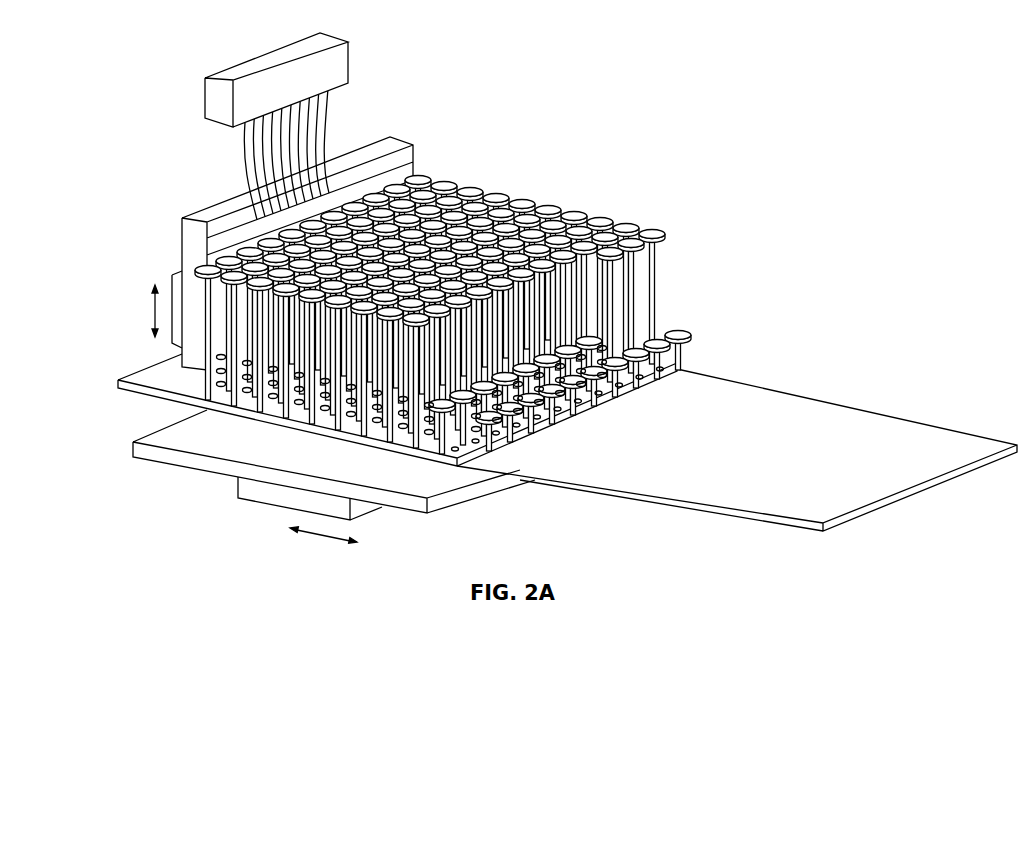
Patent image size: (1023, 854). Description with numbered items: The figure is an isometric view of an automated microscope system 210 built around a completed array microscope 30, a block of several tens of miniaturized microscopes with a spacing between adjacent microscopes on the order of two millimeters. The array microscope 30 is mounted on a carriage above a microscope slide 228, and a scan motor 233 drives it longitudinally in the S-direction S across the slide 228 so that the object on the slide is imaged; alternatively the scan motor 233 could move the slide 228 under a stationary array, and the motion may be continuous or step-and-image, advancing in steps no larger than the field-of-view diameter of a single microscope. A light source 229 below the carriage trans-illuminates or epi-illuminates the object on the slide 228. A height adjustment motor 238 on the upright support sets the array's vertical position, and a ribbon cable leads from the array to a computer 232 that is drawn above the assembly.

The automated microscope system 210 is at (515, 311).
The computer 232 is at (342, 63).
The array microscope (AM) 30 is at (549, 194).
The height adjustment motor 238 is at (178, 271).
The microscope slide 228 is at (889, 419).
The light source 229 is at (147, 460).
The scan motor 233 is at (257, 500).
The S-direction S is at (338, 545).